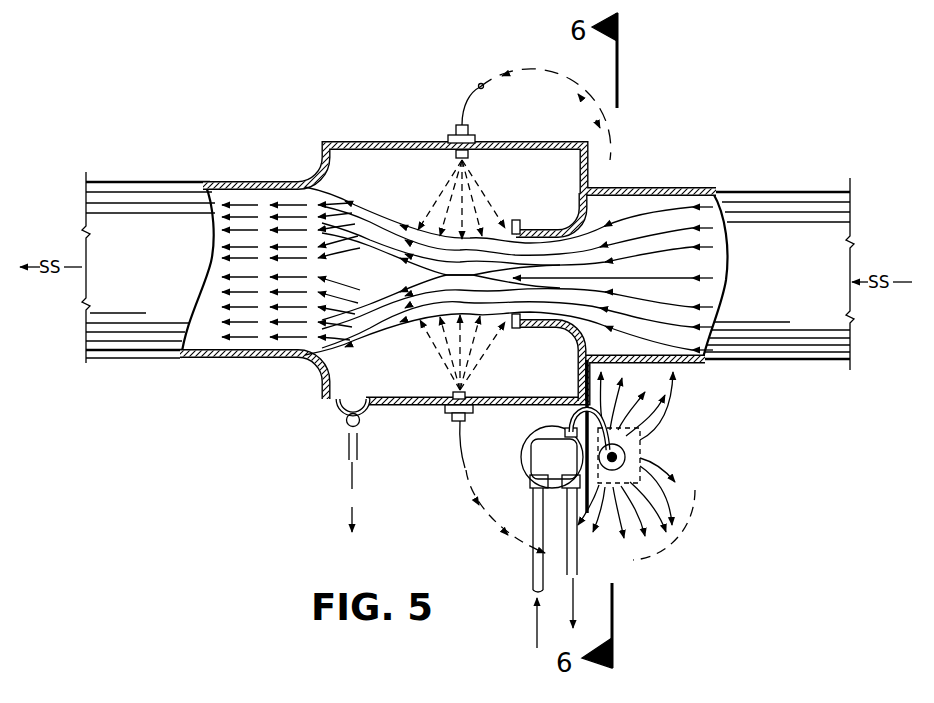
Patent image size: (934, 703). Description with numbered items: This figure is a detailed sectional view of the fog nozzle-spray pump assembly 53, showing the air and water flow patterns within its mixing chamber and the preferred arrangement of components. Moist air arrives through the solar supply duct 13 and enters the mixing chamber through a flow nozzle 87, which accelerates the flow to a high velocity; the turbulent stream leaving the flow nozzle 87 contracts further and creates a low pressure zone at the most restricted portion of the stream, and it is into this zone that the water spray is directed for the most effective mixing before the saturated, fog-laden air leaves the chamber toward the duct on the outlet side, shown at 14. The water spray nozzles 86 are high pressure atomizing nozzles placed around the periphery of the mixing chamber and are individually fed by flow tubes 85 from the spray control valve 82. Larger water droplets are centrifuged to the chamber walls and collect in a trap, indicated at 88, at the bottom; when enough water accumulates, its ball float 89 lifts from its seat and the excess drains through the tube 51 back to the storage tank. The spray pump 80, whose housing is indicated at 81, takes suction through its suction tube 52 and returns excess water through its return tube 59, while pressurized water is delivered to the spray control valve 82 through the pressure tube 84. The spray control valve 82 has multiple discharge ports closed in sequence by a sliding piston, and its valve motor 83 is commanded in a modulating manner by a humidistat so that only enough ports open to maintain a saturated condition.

The solar supply duct 13 is at (795, 192).
The outlet pipe section 14 is at (185, 182).
The drain tube 51 is at (348, 456).
The suction tube 52 is at (533, 575).
The fog nozzle-spray pump assembly 53 is at (512, 141).
The return tube 59 is at (578, 572).
The spray pump 80 is at (530, 482).
The pump 81 is at (532, 440).
The spray control valve 82 is at (601, 436).
The valve motor 83 is at (648, 446).
The pressure tube 84 is at (593, 420).
The flow tubes 85 is at (478, 86).
The water spray nozzles 86 is at (455, 130).
The flow nozzle 87 is at (560, 228).
The drain cup 88 is at (370, 426).
The ball float 89 is at (355, 404).